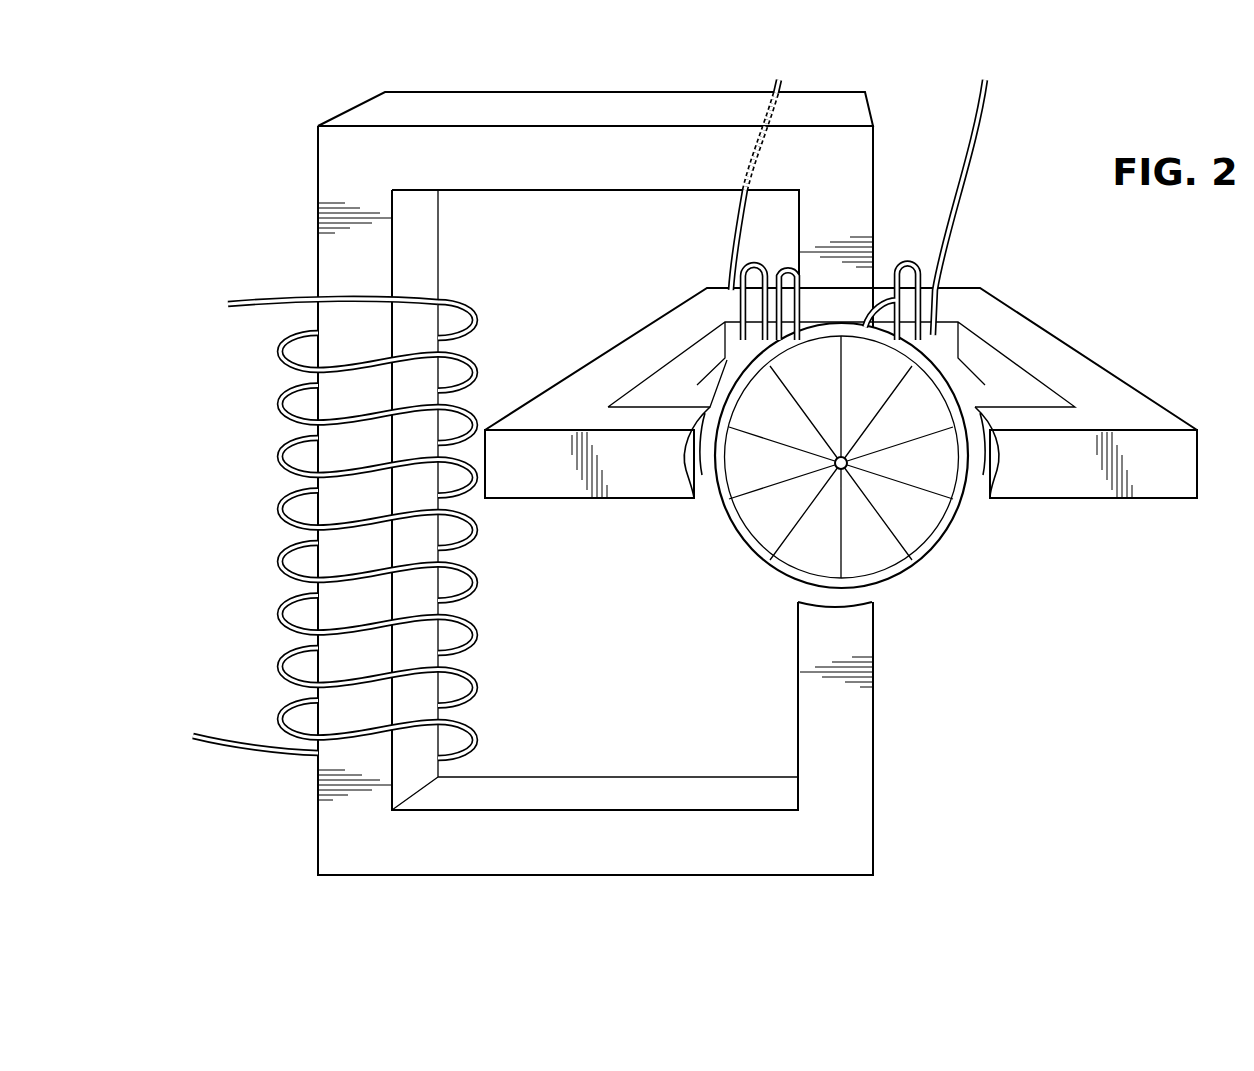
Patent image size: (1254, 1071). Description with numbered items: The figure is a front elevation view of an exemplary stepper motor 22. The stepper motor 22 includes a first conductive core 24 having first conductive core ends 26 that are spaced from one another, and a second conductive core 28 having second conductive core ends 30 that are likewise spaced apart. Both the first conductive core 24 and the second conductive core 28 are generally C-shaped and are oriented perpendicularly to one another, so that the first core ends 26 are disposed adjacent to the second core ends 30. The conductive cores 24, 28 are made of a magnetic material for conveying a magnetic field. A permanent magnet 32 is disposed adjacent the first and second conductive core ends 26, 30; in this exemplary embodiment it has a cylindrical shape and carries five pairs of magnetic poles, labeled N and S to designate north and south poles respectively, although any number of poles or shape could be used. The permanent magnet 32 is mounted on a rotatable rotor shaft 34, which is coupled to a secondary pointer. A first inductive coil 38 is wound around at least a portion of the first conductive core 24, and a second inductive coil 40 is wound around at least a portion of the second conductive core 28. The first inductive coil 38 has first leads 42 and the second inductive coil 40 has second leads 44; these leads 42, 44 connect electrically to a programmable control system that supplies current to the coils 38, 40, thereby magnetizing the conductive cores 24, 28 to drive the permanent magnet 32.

The stepper motor 22 is at (955, 572).
The first conductive core 24 is at (333, 165).
The first conductive core ends 26 is at (891, 290).
The second conductive core 28 is at (1103, 363).
The second conductive core ends 30 is at (694, 472).
The permanent magnet 32 is at (741, 543).
The rotor shaft 34 is at (836, 461).
The first inductive coil 38 is at (282, 460).
The second inductive coil 40 is at (789, 272).
The first leads 42 is at (276, 298).
The second leads 44 is at (779, 78).